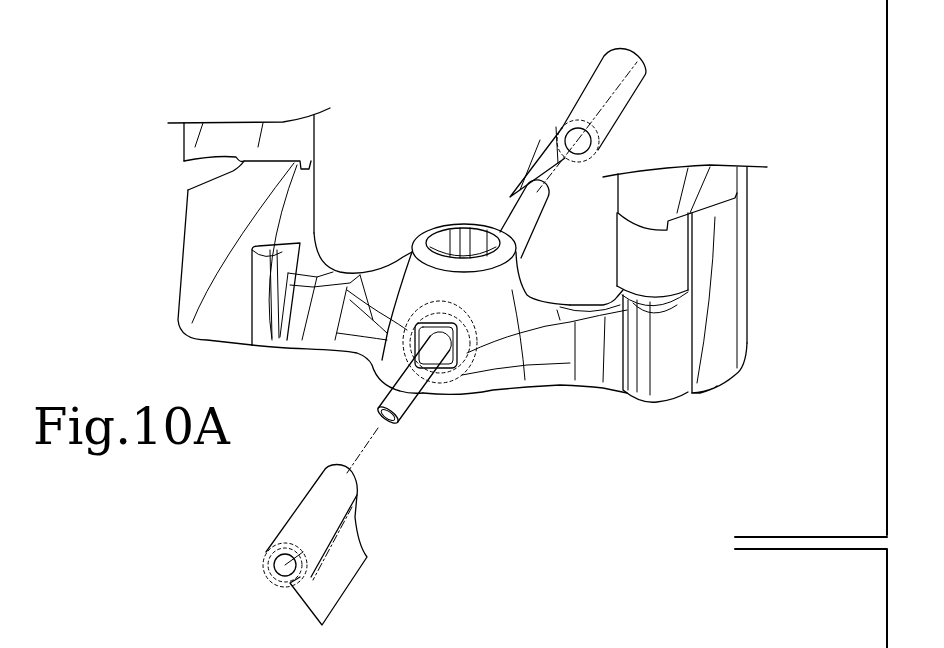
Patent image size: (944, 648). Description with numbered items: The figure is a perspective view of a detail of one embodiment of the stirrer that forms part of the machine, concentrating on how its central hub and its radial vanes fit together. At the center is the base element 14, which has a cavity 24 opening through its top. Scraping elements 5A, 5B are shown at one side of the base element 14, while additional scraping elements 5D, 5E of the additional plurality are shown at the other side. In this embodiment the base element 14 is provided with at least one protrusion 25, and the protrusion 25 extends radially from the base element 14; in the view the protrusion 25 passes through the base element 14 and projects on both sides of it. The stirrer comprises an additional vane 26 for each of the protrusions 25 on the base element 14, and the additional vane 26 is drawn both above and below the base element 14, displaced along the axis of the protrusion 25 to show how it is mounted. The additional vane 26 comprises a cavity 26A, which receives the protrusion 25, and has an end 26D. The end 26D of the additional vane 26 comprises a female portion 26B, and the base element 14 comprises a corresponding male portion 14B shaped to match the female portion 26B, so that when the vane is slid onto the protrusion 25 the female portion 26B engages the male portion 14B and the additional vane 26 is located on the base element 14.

The scraping element 5A is at (193, 233).
The scraping element 5B is at (223, 140).
The additional scraping element 5D is at (700, 302).
The additional scraping element 5E is at (725, 183).
The base element 14 is at (553, 377).
The male portion 14B is at (443, 377).
The cavity 24 is at (443, 230).
The protrusion 25 is at (517, 227).
The additional vane 26 is at (600, 81).
The cavity 26A is at (583, 147).
The female portion 26B is at (433, 321).
The end 26D is at (577, 122).